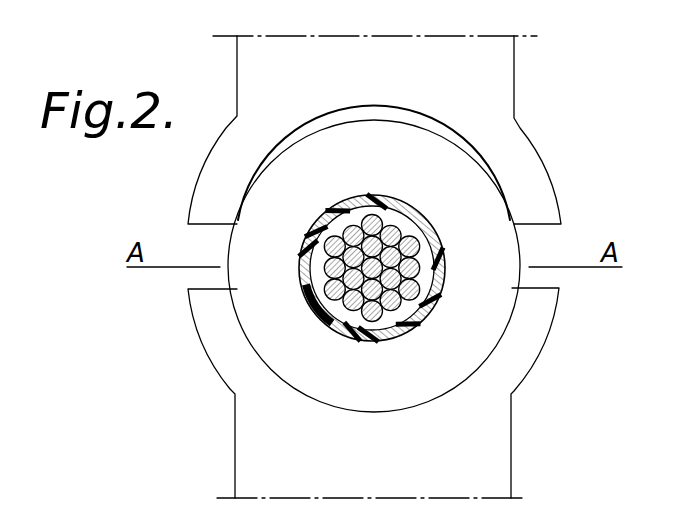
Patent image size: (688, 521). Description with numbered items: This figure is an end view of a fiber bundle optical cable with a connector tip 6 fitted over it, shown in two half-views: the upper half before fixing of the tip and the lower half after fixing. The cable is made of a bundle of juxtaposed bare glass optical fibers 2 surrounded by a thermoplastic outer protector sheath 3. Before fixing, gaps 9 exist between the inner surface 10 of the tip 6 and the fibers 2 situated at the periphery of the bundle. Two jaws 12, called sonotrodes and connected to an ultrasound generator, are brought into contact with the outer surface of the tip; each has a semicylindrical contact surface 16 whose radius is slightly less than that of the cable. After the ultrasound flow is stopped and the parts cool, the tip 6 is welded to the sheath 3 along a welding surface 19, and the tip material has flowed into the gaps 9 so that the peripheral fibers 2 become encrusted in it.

The optical fibers 2 is at (408, 302).
The outer protector sheath 3 is at (442, 276).
The connector tip 6 is at (490, 205).
The gaps 9 is at (330, 237).
The inner surface of the tip 10 is at (400, 215).
The jaws 12 is at (486, 66).
The contact surface 16 is at (368, 107).
The welding surface 19 is at (346, 327).